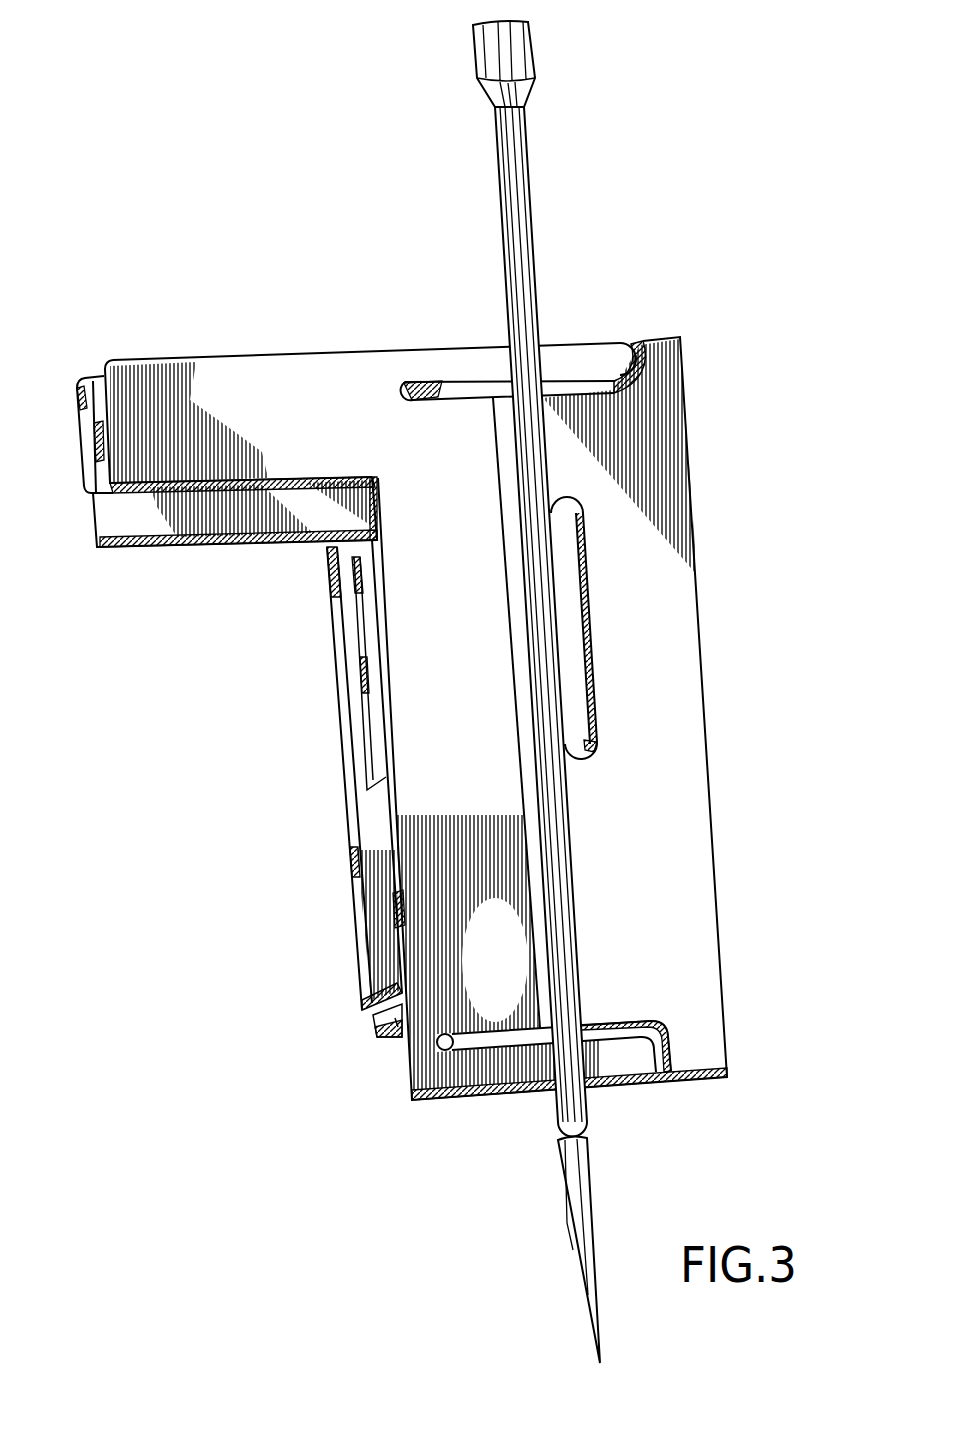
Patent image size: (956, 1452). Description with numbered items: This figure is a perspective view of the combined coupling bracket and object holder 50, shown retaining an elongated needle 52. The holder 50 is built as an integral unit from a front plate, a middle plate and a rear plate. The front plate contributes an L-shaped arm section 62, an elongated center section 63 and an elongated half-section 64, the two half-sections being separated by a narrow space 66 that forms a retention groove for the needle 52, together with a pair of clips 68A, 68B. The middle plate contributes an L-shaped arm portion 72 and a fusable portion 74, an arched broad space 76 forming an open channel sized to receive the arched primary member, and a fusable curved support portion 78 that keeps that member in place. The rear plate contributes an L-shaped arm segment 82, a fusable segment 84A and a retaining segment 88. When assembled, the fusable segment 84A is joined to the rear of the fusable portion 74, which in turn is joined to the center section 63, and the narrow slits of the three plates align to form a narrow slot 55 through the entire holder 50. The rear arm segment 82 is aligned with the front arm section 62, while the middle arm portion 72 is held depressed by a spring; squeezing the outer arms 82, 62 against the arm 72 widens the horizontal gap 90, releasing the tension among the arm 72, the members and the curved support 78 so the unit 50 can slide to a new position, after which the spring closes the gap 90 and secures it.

The combined coupling bracket and object holder 50 is at (566, 718).
The elongated needle 52 is at (526, 107).
The narrow slot 55 is at (567, 565).
The L-shaped arm section 62 is at (278, 455).
The elongated center section 63 is at (398, 610).
The elongated half-section 64 is at (680, 887).
The narrow space 66 is at (514, 582).
The clip 68A is at (598, 358).
The clip 68B is at (622, 1063).
The L-shaped arm portion 72 is at (187, 515).
The fusable portion 74 is at (362, 665).
The arched broad space 76 is at (566, 735).
The fusable curved support portion 78 is at (533, 1040).
The L-shaped arm segment 82 is at (77, 385).
The fusable segment 84A is at (345, 617).
The retaining segment 88 is at (365, 858).
The horizontal gap 90 is at (312, 547).